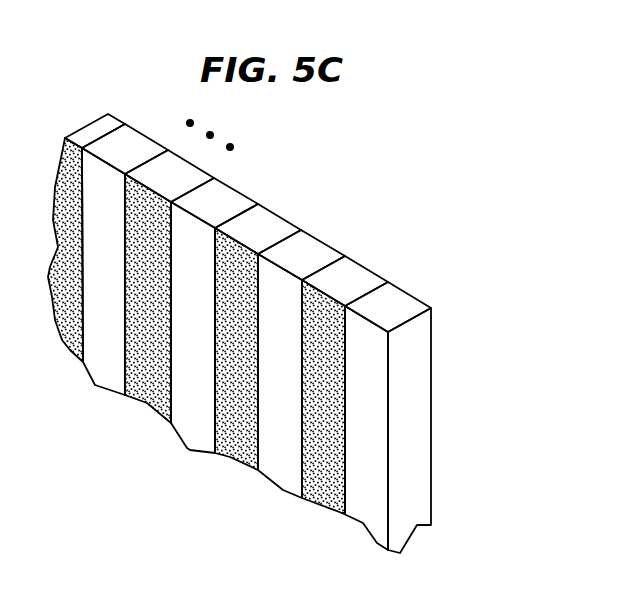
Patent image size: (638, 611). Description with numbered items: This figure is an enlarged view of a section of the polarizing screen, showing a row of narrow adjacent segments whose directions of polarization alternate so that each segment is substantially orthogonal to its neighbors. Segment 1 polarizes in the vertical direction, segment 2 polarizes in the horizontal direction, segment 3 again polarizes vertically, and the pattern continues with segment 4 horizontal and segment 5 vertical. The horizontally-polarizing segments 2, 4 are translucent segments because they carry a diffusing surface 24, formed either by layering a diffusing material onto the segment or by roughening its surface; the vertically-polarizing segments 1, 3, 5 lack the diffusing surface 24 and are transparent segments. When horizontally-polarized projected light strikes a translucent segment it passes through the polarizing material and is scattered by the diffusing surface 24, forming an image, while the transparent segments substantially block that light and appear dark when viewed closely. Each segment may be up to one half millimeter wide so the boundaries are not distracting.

The segment 1 is at (405, 303).
The segment 2 is at (357, 278).
The segment 3 is at (312, 249).
The segment 4 is at (270, 226).
The segment 5 is at (226, 201).
The diffusing surface 24 is at (233, 441).